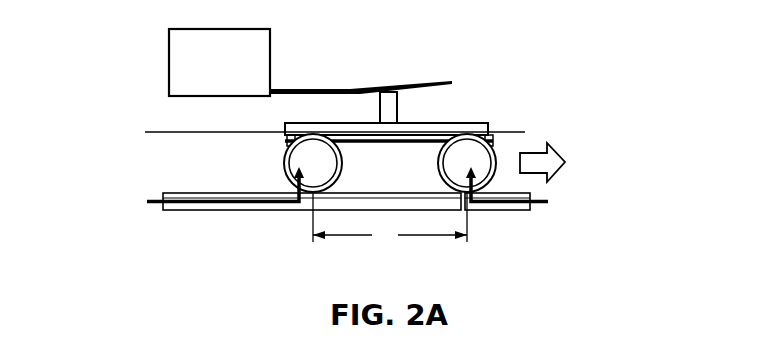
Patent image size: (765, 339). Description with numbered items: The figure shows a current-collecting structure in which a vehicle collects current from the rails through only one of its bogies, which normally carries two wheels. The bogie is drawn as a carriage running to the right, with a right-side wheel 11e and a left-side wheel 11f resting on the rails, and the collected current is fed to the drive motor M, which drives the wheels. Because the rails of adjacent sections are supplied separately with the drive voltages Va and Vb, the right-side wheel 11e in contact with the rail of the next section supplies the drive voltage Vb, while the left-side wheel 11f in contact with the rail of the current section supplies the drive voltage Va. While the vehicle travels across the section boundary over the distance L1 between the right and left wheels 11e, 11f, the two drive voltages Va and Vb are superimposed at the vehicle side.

The right-side wheel 11e is at (489, 125).
The left-side wheel 11f is at (293, 161).
The motor M is at (219, 62).
The drive voltage Va is at (208, 188).
The drive voltage Vb is at (520, 188).
The distance between the right and left wheels L1 is at (390, 220).